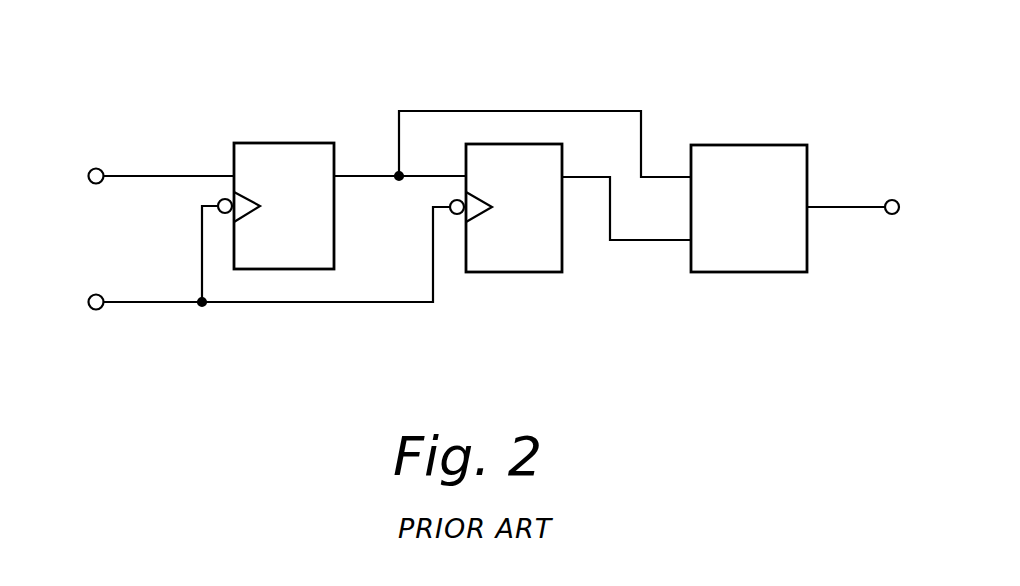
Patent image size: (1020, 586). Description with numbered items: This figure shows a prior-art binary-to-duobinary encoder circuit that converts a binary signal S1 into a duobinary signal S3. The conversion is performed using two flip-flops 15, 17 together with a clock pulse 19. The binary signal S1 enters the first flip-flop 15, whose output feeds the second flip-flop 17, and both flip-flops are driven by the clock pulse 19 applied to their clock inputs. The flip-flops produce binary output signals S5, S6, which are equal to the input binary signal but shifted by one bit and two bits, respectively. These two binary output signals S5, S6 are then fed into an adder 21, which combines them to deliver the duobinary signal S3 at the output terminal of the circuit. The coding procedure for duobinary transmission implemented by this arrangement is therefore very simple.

The flip-flop 15 is at (258, 143).
The flip-flop 17 is at (500, 262).
The adder 21 is at (744, 150).
The clock pulse 19 is at (163, 282).
The binary signal S1 is at (163, 158).
The duobinary signal S3 is at (878, 188).
The binary output signal S5 is at (683, 164).
The binary output signal S6 is at (680, 227).